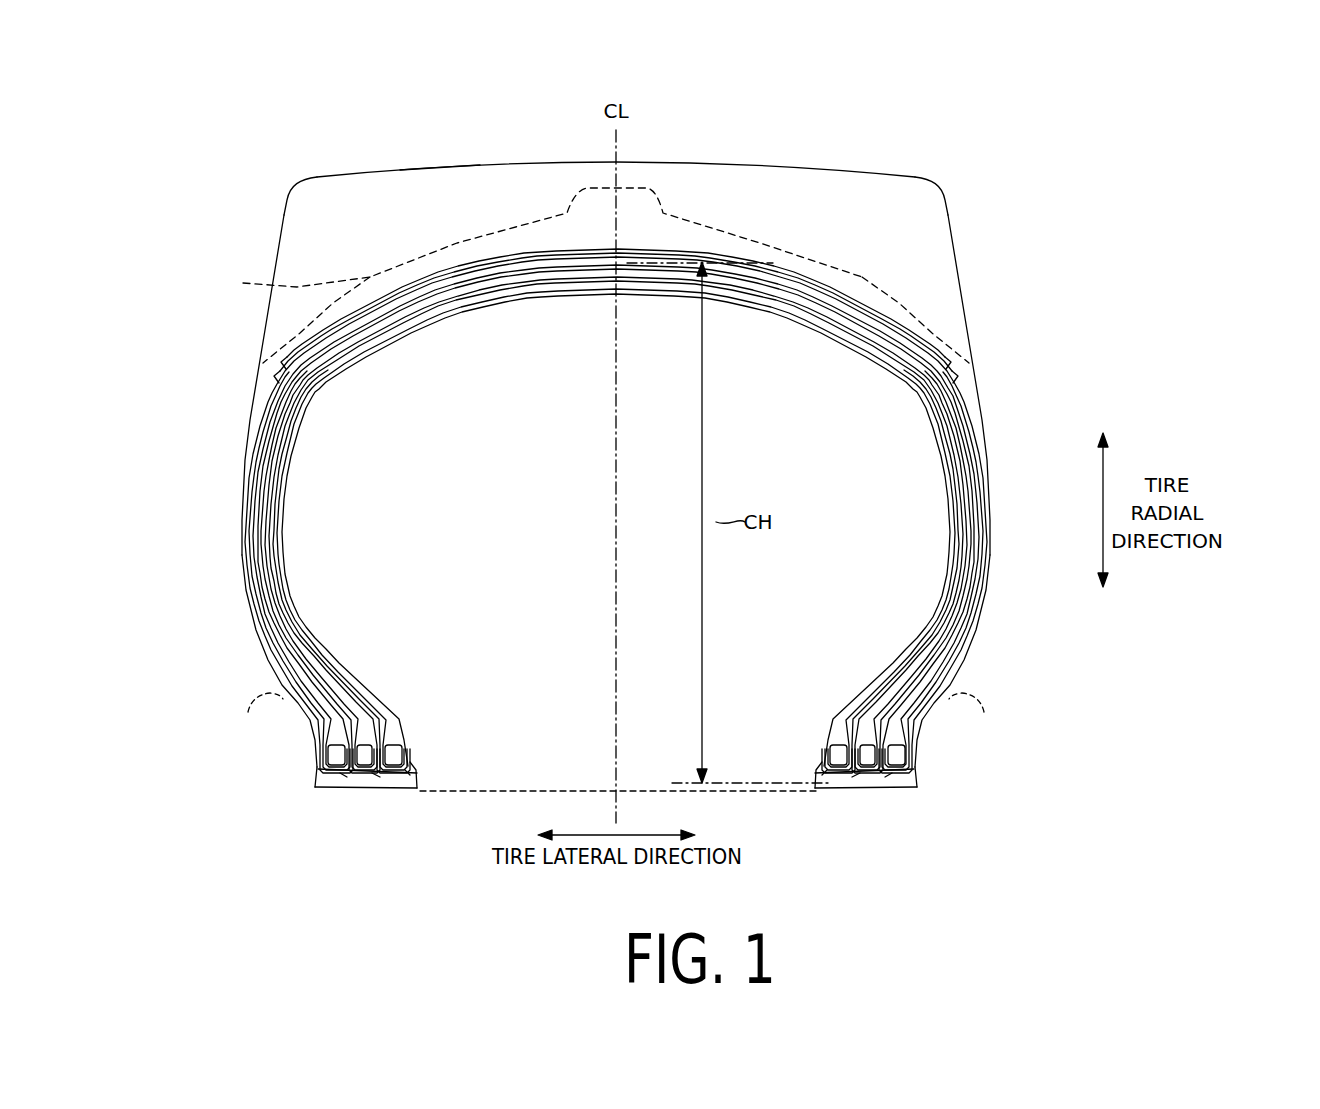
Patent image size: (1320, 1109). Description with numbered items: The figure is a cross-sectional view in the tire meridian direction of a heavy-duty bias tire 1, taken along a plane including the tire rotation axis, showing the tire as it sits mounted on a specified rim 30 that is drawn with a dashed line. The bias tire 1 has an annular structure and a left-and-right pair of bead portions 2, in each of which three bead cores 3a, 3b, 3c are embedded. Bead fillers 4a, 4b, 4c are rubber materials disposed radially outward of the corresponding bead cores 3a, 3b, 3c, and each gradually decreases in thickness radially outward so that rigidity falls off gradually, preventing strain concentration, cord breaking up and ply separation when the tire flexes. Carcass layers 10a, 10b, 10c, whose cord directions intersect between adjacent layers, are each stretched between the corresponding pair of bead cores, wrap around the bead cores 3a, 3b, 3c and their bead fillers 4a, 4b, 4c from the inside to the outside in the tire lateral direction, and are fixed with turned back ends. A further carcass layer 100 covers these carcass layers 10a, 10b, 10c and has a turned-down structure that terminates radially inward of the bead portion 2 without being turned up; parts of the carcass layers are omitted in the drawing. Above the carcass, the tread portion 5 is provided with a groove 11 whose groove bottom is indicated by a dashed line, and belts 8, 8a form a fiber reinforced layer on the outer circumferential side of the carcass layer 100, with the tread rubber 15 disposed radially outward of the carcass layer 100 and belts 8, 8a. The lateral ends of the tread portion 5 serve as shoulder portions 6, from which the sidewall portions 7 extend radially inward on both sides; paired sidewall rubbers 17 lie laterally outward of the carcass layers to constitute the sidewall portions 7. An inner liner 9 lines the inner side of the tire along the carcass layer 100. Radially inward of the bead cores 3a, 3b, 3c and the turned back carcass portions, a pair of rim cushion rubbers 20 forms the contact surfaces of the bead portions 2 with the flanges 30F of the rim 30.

The bias tire 1 is at (257, 128).
The bead portion 2 is at (835, 790).
The bead core 3a is at (403, 754).
The bead core 3b is at (330, 768).
The bead core 3c is at (330, 752).
The bead filler 4a is at (403, 733).
The bead filler 4b is at (383, 707).
The bead filler 4c is at (348, 690).
The tread portion 5 is at (546, 166).
The shoulder portion 6 is at (318, 176).
The sidewall portion 7 is at (243, 452).
The belt 8 is at (285, 360).
The belt 8a is at (357, 309).
The inner liner 9 is at (943, 550).
The carcass layer 10a is at (408, 787).
The carcass layer 10b is at (377, 783).
The carcass layer 10c is at (343, 780).
The groove 11 is at (592, 275).
The tread rubber 15 is at (440, 170).
The sidewall rubber 17 is at (243, 556).
The rim cushion rubber 20 is at (320, 787).
The rim 30 is at (745, 793).
The flange 30F is at (606, 716).
The carcass layer 100 is at (338, 790).